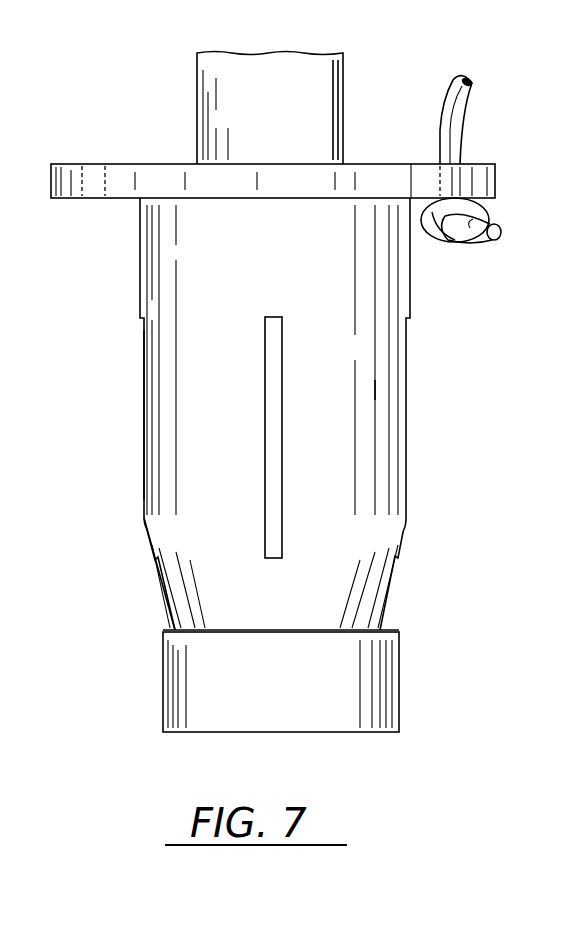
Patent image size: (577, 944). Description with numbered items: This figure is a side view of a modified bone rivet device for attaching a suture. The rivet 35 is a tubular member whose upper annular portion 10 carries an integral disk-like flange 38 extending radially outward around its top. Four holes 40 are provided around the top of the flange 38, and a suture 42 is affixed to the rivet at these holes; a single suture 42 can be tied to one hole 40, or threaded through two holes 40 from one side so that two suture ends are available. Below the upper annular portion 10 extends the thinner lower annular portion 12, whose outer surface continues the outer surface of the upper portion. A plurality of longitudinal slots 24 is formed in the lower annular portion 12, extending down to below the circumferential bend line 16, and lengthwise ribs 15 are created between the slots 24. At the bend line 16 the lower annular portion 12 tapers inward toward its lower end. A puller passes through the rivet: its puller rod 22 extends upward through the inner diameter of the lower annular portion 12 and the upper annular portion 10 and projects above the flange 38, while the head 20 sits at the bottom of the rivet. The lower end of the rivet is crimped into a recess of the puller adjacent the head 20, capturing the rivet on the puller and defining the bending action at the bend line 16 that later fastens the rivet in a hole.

The upper annular portion 10 is at (139, 258).
The lower annular portion 12 is at (194, 368).
The lengthwise ribs 15 is at (380, 392).
The circumferential bend line 16 is at (146, 518).
The head 20 is at (370, 700).
The puller rod 22 is at (330, 92).
The longitudinal slots 24 is at (266, 452).
The rivet 35 is at (412, 278).
The disk-like flange 38 is at (411, 164).
The holes 40 is at (112, 178).
The suture 42 is at (463, 118).